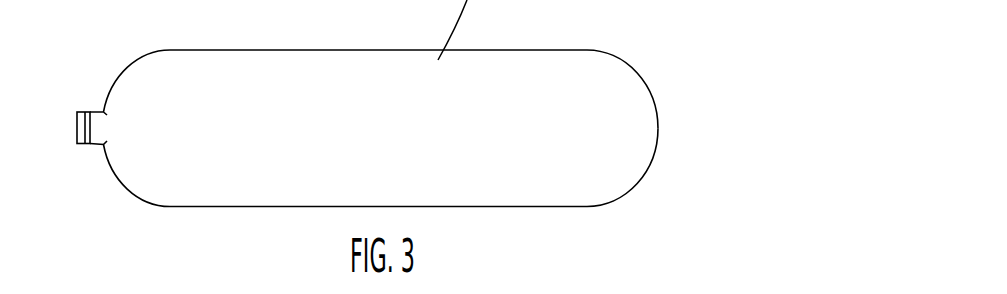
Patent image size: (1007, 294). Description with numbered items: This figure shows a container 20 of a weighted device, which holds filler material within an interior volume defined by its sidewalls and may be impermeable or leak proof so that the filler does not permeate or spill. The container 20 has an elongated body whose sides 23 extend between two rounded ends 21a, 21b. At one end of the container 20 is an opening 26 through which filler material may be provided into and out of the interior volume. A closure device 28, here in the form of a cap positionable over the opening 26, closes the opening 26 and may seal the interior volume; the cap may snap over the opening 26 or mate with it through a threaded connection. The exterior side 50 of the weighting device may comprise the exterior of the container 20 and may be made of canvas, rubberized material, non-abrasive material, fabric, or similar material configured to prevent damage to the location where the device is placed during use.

The container 20 is at (394, 141).
The end 21a is at (110, 180).
The end 21b is at (652, 97).
The side 23 is at (213, 178).
The opening 26 is at (83, 110).
The closure device 28 is at (72, 137).
The exterior side of the weighting device 50 is at (605, 172).